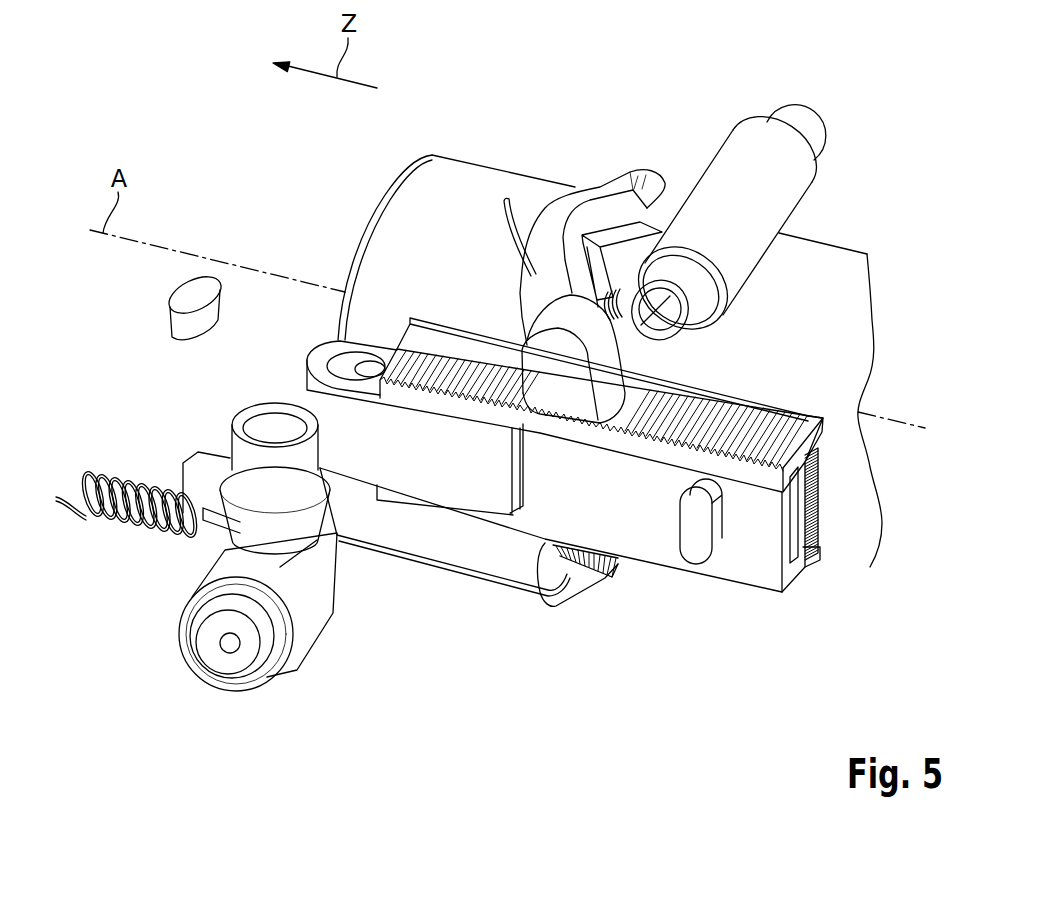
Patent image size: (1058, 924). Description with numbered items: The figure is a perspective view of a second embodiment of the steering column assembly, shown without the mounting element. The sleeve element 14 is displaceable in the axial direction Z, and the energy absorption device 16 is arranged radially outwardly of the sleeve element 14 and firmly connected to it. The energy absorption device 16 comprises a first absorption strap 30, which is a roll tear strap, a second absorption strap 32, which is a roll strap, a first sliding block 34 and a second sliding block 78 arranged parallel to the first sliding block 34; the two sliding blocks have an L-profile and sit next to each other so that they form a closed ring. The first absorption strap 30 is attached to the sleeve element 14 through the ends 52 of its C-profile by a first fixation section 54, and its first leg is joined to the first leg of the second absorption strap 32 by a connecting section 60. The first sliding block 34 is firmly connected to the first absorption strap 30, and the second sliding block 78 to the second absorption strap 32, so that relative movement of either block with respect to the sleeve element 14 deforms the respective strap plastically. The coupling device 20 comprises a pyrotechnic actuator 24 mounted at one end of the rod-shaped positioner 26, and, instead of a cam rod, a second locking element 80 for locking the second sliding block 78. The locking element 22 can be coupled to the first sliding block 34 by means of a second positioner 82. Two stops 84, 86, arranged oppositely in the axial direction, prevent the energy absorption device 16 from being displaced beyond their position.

The sleeve element 14 is at (459, 175).
The energy absorption device 16 is at (825, 602).
The coupling device 20 is at (202, 702).
The locking element 22 is at (558, 353).
The pyrotechnic actuator 24 is at (185, 630).
The positioner 26 is at (400, 563).
The first absorption strap 30 is at (810, 415).
The second absorption strap 32 is at (478, 480).
The sliding block 34 is at (808, 514).
The ends 52 is at (823, 424).
The first fixation section 54 is at (803, 427).
The connecting section 60 is at (815, 481).
The second sliding block 78 is at (760, 560).
The second locking element 80 is at (558, 597).
The second positioner 82 is at (689, 166).
The stop 84 is at (180, 333).
The stop 86 is at (697, 537).